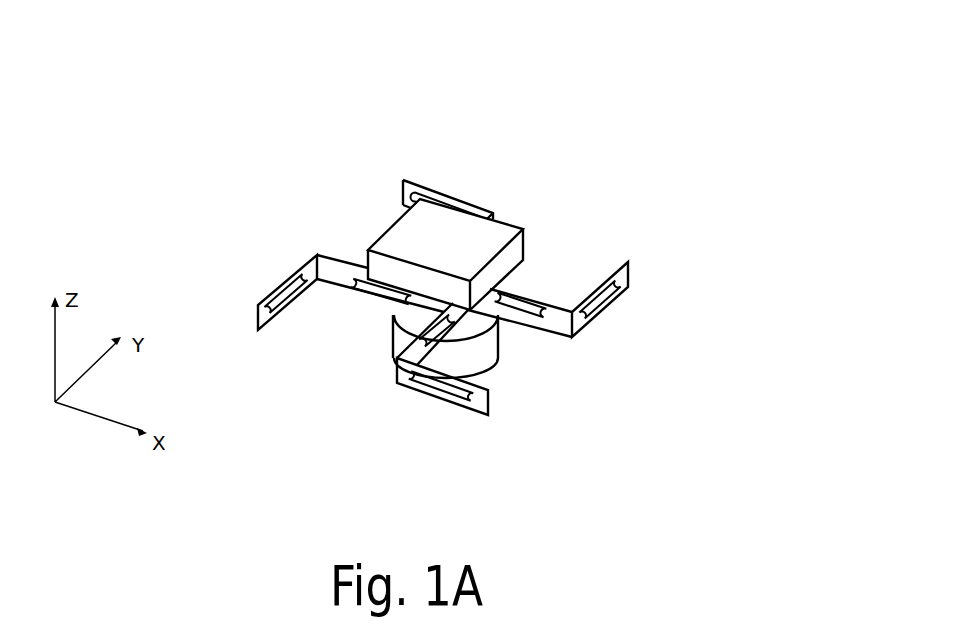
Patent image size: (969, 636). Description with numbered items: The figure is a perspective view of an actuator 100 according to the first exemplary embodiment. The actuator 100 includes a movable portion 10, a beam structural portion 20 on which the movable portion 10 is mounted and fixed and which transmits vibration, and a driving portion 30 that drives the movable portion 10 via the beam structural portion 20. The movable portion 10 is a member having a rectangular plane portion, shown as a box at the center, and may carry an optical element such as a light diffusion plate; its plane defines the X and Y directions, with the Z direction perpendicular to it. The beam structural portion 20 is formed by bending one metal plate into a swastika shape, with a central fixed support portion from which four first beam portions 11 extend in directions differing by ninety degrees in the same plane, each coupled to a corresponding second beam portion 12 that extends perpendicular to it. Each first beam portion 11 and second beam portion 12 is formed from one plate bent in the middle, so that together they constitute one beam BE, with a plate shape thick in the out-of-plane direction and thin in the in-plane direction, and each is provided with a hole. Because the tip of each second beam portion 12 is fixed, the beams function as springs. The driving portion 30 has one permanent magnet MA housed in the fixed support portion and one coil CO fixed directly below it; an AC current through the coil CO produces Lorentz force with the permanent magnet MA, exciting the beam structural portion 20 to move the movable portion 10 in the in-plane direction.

The actuator 100 is at (494, 104).
The movable portion 10 is at (490, 238).
The first beam portion 11 is at (330, 270).
The second beam portion 12 is at (413, 178).
The beam structural portion 20 is at (593, 252).
The driving portion 30 is at (366, 372).
The beam BE is at (386, 140).
The coil CO is at (392, 333).
The permanent magnet MA is at (484, 326).